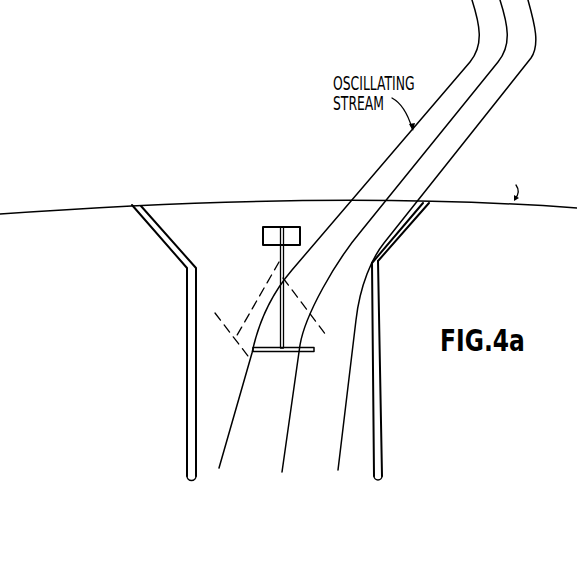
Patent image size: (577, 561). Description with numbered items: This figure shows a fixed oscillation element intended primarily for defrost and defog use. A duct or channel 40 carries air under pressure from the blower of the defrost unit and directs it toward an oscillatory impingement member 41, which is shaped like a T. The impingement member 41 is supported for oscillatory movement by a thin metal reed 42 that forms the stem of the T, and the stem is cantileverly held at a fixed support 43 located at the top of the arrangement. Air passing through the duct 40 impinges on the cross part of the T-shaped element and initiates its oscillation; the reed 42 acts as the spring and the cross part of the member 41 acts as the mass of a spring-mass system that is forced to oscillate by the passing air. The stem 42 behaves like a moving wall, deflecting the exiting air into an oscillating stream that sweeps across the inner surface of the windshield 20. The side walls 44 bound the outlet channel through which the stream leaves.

The windshield 20 is at (258, 98).
The duct 40 is at (381, 427).
The oscillatory impingement member 41 is at (292, 353).
The thin metal reed 42 is at (291, 319).
The fixed support 43 is at (274, 221).
The duct side walls 44 is at (164, 247).